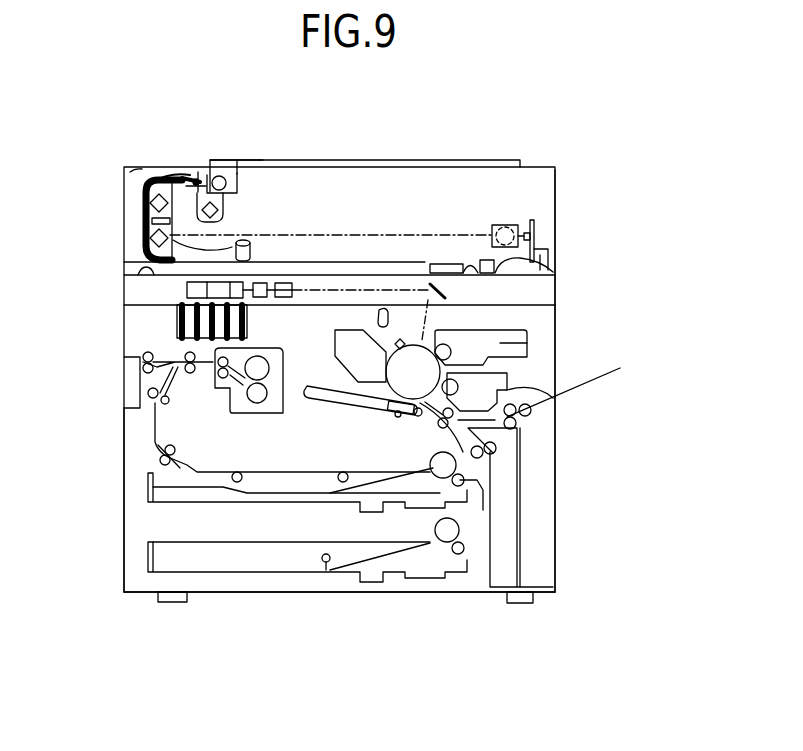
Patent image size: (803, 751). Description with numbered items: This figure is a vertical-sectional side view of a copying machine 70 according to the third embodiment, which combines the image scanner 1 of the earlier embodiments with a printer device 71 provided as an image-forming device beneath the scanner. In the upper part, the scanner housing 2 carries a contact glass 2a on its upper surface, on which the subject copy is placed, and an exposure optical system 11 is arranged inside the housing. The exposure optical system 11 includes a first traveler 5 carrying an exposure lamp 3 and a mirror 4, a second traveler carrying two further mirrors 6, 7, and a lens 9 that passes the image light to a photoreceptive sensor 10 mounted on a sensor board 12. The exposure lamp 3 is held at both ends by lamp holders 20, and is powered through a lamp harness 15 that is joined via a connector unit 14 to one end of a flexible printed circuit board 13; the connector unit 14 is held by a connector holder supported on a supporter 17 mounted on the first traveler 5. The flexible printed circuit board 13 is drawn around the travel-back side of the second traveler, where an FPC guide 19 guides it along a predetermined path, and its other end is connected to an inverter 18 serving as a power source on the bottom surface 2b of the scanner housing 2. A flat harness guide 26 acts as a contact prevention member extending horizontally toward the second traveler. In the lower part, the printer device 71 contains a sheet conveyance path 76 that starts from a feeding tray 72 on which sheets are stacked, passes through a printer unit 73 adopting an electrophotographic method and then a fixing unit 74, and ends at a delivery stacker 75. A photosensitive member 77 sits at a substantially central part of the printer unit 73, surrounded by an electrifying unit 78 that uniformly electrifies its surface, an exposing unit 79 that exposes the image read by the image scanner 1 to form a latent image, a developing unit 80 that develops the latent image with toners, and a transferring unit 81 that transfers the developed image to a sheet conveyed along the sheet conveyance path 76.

The image scanner 1 is at (571, 160).
The scanner housing 2 is at (520, 165).
The contact glass 2a is at (446, 160).
The bottom surface 2b is at (137, 276).
The exposure lamp 3 is at (210, 168).
The mirror 4 is at (223, 213).
The first traveler 5 is at (238, 186).
The mirror 6 is at (146, 182).
The mirror 7 is at (155, 250).
The lens 9 is at (505, 224).
The photoreceptive sensor 10 is at (534, 234).
The exposure optical system 11 is at (304, 208).
The sensor board 12 is at (550, 256).
The flexible printed circuit board 13 is at (384, 262).
The connector unit 14 is at (164, 167).
The lamp harness 15 is at (156, 174).
The supporter 17 is at (186, 174).
The inverter 18 is at (555, 289).
The FPC guide 19 is at (148, 210).
The lamp holder 20 is at (227, 180).
The harness guide 26 is at (158, 174).
The copying machine 70 is at (403, 608).
The printer device 71 is at (119, 574).
The feeding tray 72 is at (147, 490).
The printer unit 73 is at (518, 373).
The fixing unit 74 is at (262, 415).
The delivery stacker 75 is at (120, 385).
The sheet conveyance path 76 is at (304, 387).
The photosensitive member 77 is at (386, 414).
The electrifying unit 78 is at (399, 341).
The exposing unit 79 is at (555, 308).
The developing unit 80 is at (525, 337).
The transferring unit 81 is at (398, 418).